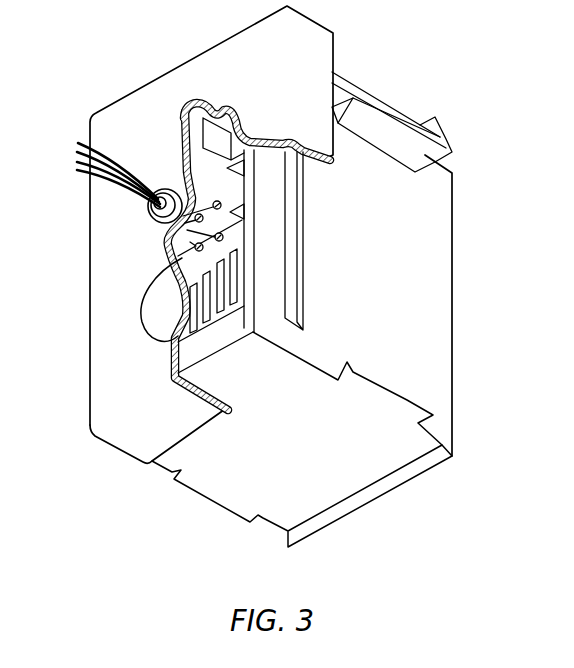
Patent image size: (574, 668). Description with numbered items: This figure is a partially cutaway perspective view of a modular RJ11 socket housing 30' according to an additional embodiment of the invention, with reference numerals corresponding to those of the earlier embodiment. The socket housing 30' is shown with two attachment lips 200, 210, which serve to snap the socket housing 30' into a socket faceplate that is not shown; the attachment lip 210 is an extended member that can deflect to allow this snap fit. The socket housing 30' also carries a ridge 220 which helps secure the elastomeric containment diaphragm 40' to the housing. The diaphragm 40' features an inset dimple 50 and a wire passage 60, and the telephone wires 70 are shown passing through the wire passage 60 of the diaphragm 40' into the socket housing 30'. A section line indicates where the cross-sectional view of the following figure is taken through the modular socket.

The diaphragm 40' is at (199, 234).
The socket housing 30' is at (475, 305).
The attachment lip 210 is at (441, 137).
The ridge 220 is at (305, 268).
The attachment lip 200 is at (376, 498).
The telephone wires 70 is at (82, 177).
The wire passage 60 is at (158, 224).
The inset dimple 50 is at (160, 318).